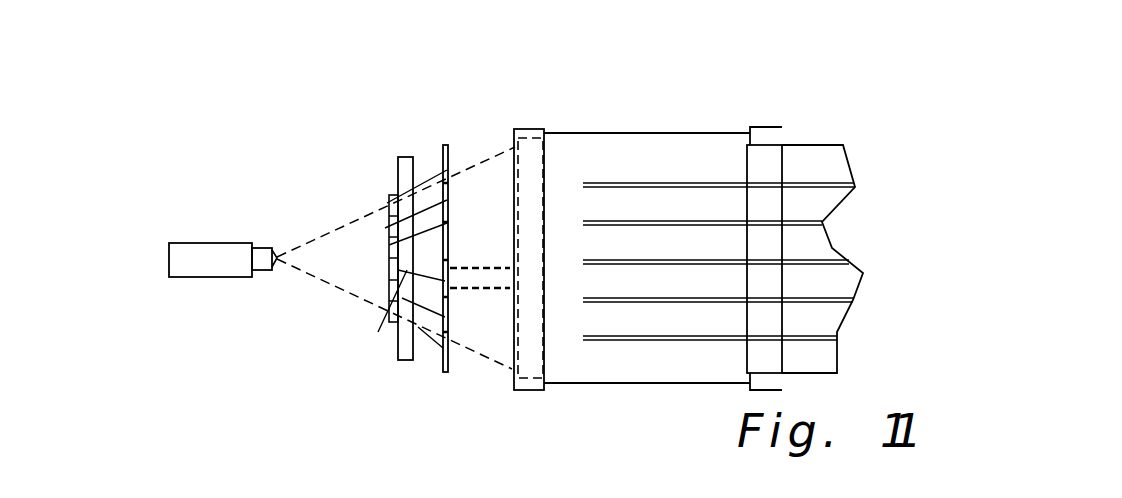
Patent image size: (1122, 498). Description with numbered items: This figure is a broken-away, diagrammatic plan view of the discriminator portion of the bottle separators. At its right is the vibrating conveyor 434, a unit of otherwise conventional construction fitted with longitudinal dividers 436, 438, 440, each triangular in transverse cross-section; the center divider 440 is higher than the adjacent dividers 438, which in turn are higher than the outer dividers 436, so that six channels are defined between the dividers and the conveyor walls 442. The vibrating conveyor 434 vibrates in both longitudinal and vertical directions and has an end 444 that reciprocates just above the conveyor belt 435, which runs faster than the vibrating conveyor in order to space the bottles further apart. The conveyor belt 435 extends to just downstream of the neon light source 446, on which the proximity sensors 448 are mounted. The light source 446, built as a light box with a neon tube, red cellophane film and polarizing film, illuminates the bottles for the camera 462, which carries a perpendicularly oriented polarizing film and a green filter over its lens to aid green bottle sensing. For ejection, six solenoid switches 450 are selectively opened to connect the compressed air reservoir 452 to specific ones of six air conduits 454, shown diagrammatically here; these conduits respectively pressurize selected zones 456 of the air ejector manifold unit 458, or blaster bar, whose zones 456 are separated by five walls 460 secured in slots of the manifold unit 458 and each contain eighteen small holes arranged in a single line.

The camera 462 is at (217, 260).
The solenoid switches 450 is at (397, 227).
The compressed air reservoir 452 is at (408, 353).
The air conduits 454 is at (397, 322).
The air ejector manifold unit 458 is at (447, 147).
The zones 456 is at (513, 203).
The proximity sensors 448 is at (513, 246).
The walls 460 is at (450, 343).
The neon light source 446 is at (532, 142).
The conveyor belt 435 is at (663, 132).
The end 444 is at (745, 350).
The outer dividers 436 is at (830, 182).
The adjacent dividers 438 is at (800, 222).
The center divider 440 is at (833, 262).
The vibrating conveyor 434 is at (817, 373).
The conveyor walls 442 is at (817, 145).